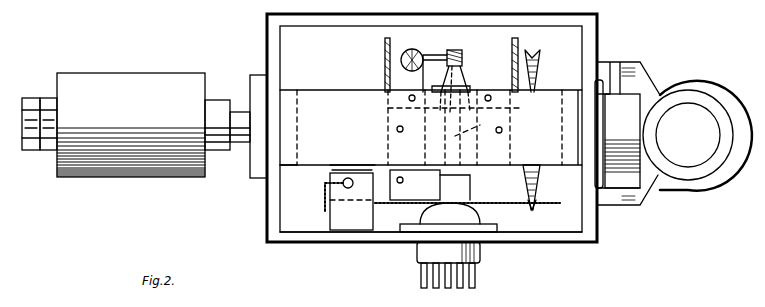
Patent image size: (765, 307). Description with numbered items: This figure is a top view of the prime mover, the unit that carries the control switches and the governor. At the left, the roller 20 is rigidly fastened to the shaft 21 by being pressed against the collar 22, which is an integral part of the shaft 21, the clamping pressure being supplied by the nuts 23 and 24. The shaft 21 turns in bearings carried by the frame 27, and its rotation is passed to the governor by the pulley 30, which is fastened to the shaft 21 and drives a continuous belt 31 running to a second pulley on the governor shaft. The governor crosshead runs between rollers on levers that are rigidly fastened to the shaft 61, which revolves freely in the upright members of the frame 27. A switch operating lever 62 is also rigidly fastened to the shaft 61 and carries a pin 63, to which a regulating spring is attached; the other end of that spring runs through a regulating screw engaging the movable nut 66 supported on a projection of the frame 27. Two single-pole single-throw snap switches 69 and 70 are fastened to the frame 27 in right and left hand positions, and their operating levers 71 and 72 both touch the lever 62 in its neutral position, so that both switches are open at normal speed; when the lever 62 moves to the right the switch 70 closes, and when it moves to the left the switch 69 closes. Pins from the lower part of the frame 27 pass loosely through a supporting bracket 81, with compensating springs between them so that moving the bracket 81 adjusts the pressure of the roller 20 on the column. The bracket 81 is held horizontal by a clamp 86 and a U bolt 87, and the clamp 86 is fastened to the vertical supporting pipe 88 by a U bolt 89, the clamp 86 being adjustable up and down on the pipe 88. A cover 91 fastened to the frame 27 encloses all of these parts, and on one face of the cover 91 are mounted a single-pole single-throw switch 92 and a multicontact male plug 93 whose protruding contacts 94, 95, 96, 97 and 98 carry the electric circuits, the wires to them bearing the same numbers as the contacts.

The roller 20 is at (100, 177).
The shaft 21 is at (242, 142).
The collar 22 is at (216, 100).
The nut 23 is at (46, 98).
The nut 24 is at (30, 98).
The frame 27 is at (562, 170).
The pulley 30 is at (534, 211).
The continuous belt 31 is at (540, 200).
The shaft 61 is at (470, 130).
The switch operating lever 62 is at (458, 49).
The pin 63 is at (433, 55).
The movable nut 66 is at (414, 49).
The snap switch 69 is at (347, 165).
The snap switch 70 is at (510, 148).
The operating lever 71 is at (447, 72).
The operating lever 72 is at (464, 72).
The supporting bracket 81 is at (622, 106).
The clamp 86 is at (645, 205).
The U bolt 87 is at (600, 80).
The vertical supporting pipe 88 is at (678, 92).
The U bolt 89 is at (716, 95).
The cover 91 is at (597, 222).
The single-pole single-throw switch 92 is at (330, 214).
The multicontact male plug 93 is at (480, 255).
The contact 94 is at (325, 186).
The contact 95 is at (390, 170).
The contact 96 is at (385, 48).
The contact 97 is at (480, 210).
The contact 98 is at (518, 42).